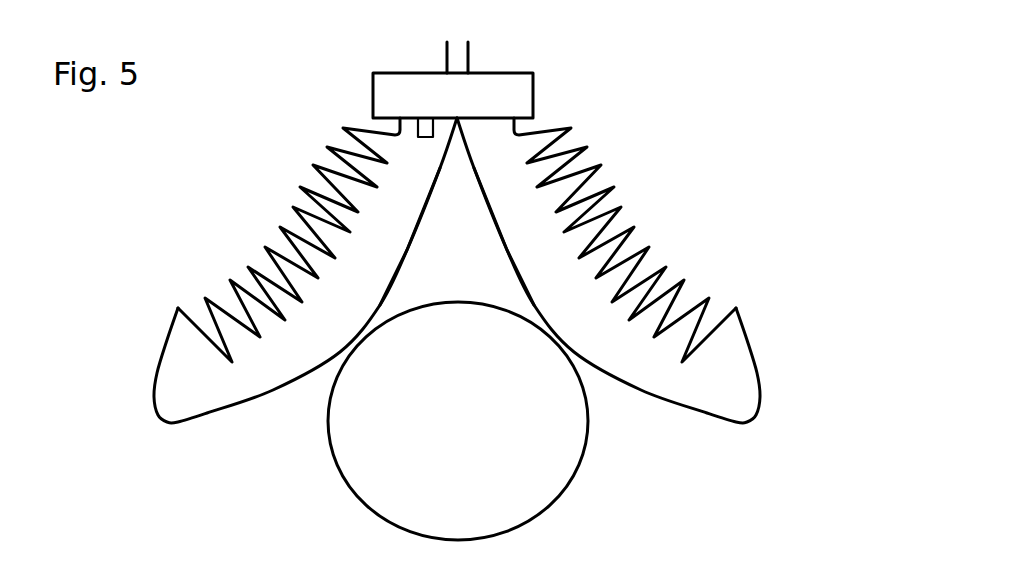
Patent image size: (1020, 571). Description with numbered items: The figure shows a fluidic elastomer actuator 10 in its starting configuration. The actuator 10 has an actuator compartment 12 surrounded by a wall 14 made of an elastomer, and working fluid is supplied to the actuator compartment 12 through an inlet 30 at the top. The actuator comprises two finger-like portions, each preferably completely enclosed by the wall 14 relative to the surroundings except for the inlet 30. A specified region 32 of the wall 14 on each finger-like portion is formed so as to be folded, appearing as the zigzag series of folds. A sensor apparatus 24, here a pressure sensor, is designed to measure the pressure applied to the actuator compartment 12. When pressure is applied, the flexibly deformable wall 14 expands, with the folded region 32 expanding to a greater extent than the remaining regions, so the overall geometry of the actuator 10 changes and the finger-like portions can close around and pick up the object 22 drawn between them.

The actuator 10 is at (697, 113).
The actuator compartment 12 is at (352, 322).
The wall 14 is at (713, 390).
The object 22 is at (473, 444).
The sensor apparatus 24 is at (427, 137).
The inlet 30 is at (457, 52).
The region 32 is at (655, 235).